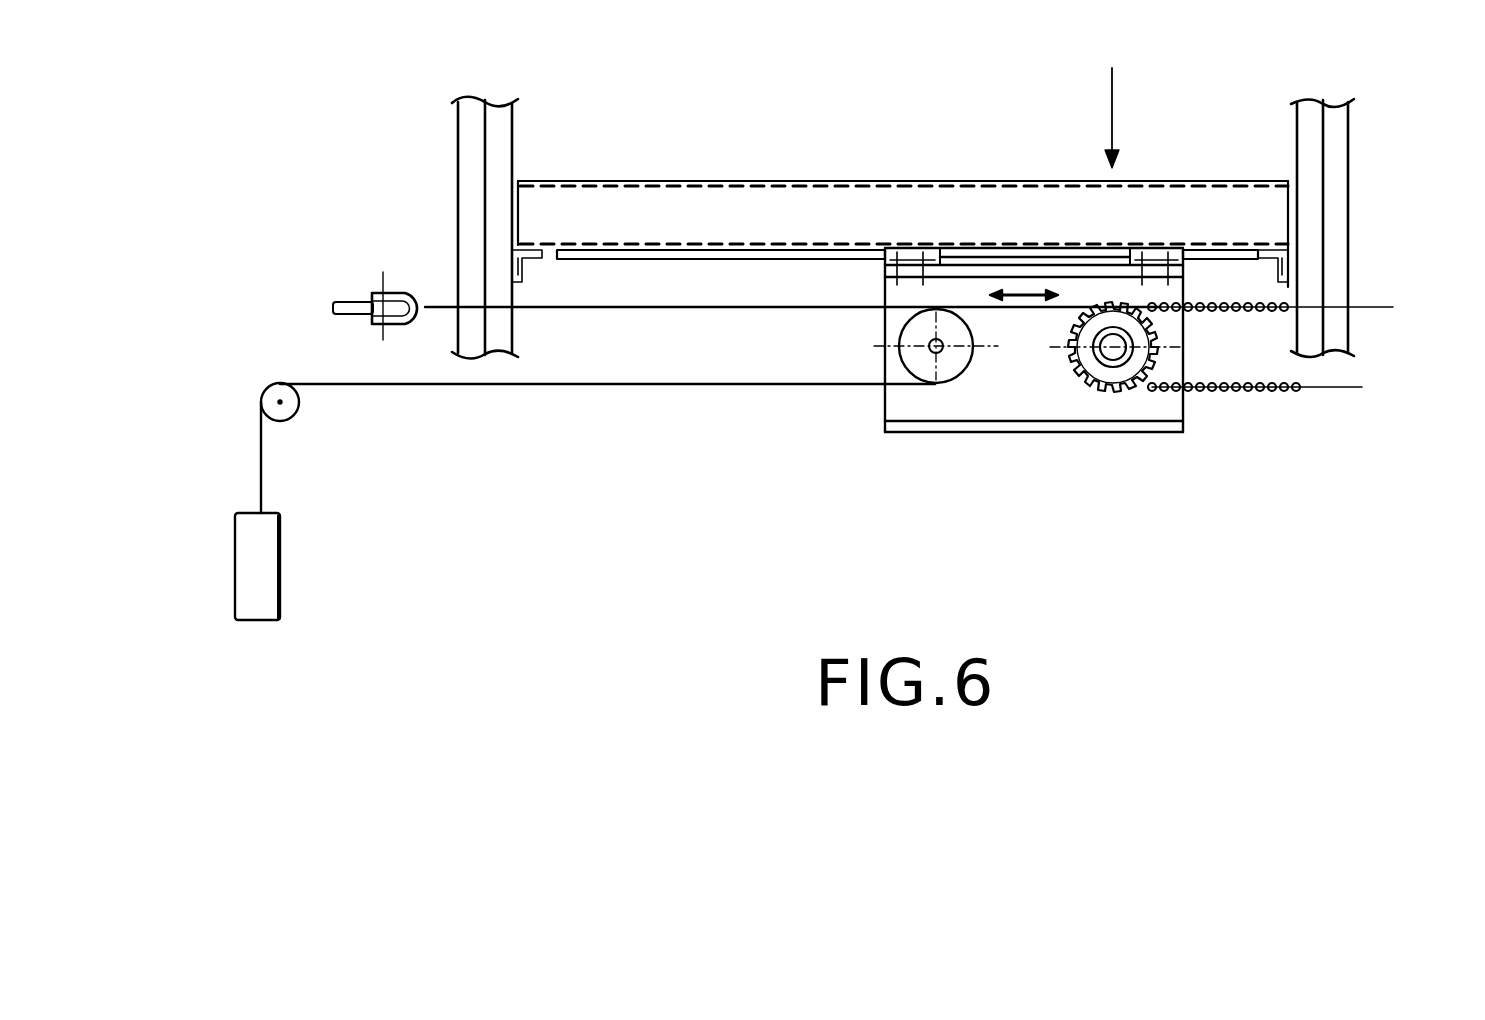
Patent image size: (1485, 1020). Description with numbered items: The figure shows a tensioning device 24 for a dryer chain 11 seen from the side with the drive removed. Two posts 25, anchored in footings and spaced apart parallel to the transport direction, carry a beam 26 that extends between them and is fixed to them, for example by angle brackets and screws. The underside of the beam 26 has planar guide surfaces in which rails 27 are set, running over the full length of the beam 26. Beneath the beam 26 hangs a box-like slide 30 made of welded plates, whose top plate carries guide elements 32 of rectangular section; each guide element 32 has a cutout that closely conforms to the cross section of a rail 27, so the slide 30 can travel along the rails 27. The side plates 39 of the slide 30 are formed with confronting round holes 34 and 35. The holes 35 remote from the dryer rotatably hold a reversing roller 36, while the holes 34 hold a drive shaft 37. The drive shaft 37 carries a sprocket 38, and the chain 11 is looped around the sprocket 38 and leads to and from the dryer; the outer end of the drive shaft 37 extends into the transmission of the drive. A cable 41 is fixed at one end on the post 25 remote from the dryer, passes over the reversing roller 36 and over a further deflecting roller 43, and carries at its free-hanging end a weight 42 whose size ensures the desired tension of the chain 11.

The chain 11 is at (1262, 390).
The tensioning device 24 is at (1117, 97).
The post 25 is at (503, 323).
The beam 26 is at (747, 203).
The rail 27 is at (613, 252).
The slide 30 is at (958, 452).
The guide element 32 is at (918, 250).
The round hole 34 is at (1098, 395).
The round hole 35 is at (943, 360).
The reversing roller 36 is at (905, 372).
The drive shaft 37 is at (1126, 395).
The sprocket 38 is at (1140, 395).
The side plate 39 is at (1054, 405).
The cable 41 is at (664, 312).
The weight 42 is at (250, 565).
The deflecting roller 43 is at (286, 411).